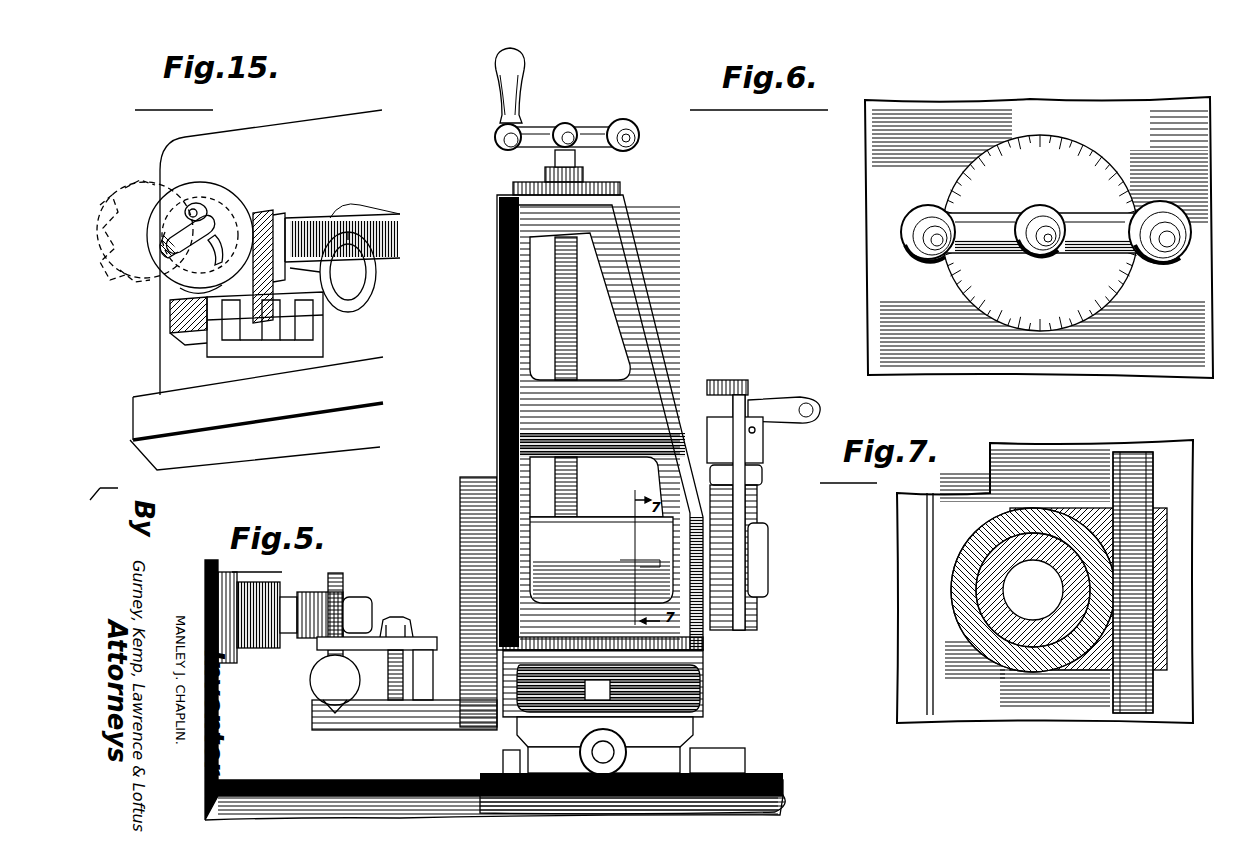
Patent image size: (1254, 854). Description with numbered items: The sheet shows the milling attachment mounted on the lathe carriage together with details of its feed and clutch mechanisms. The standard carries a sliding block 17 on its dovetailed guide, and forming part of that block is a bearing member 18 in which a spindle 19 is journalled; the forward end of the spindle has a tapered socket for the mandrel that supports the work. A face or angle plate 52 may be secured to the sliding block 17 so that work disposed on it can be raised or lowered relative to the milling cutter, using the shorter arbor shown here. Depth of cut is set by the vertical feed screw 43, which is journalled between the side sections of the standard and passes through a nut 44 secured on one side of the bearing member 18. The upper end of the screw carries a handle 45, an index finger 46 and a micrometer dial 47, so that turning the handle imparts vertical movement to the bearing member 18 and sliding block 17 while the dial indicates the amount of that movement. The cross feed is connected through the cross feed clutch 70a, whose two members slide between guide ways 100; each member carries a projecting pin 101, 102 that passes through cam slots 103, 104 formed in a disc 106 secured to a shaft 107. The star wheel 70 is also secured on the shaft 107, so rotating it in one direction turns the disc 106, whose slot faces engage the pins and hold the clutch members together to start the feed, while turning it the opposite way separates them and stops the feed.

In FIG. 7, the sliding block 17 is at (1053, 462).
In FIG. 5, the sliding block 17 is at (497, 458).
In FIG. 7, the bearing member 18 is at (975, 545).
In FIG. 5, the bearing member 18 is at (597, 530).
In FIG. 7, the spindle 19 is at (1013, 630).
In FIG. 7, the feed screw 43 is at (1147, 475).
In FIG. 7, the nut 44 is at (1163, 560).
In FIG. 6, the handle 45 is at (1180, 267).
In FIG. 6, the index finger 46 is at (1042, 222).
In FIG. 6, the micrometer dial 47 is at (1090, 157).
In FIG. 5, the face or angle plate 52 is at (460, 512).
In FIG. 15, the star wheel 70 is at (155, 280).
In FIG. 15, the cross feed clutch 70a is at (378, 243).
In FIG. 15, the guide ways 100 is at (297, 357).
In FIG. 15, the projecting pin 101 is at (223, 330).
In FIG. 15, the projecting pin 102 is at (198, 203).
In FIG. 15, the cam slot 103 is at (283, 216).
In FIG. 15, the cam slot 104 is at (183, 207).
In FIG. 15, the disc 106 is at (228, 210).
In FIG. 15, the shaft 107 is at (172, 304).